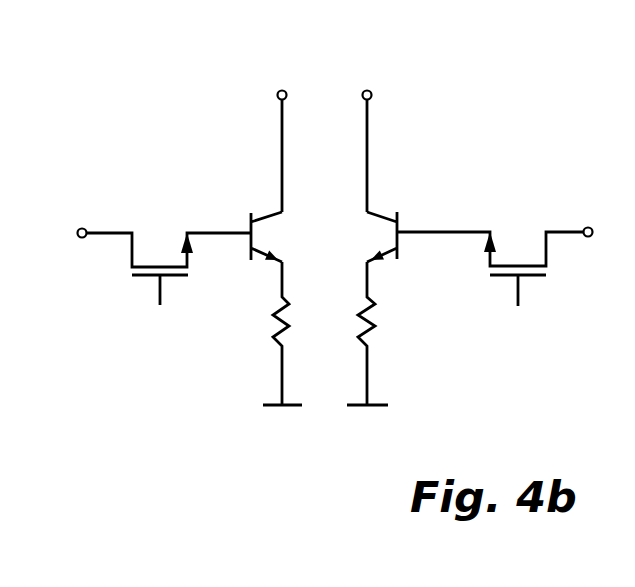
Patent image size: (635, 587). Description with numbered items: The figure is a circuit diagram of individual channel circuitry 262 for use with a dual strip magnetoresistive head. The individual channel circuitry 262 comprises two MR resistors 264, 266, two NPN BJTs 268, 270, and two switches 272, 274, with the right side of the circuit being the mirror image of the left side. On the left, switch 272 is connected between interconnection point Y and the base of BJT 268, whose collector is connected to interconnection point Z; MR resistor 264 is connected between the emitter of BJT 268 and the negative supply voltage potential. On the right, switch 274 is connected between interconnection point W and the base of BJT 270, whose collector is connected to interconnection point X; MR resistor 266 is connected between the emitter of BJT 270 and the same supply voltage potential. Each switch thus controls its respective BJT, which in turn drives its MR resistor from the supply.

The individual channel circuitry 262 is at (325, 60).
The MR resistor 264 is at (277, 320).
The MR resistor 266 is at (374, 324).
The NPN BJT 268 is at (267, 214).
The NPN BJT 270 is at (378, 212).
The switch 272 is at (135, 233).
The switch 274 is at (546, 232).